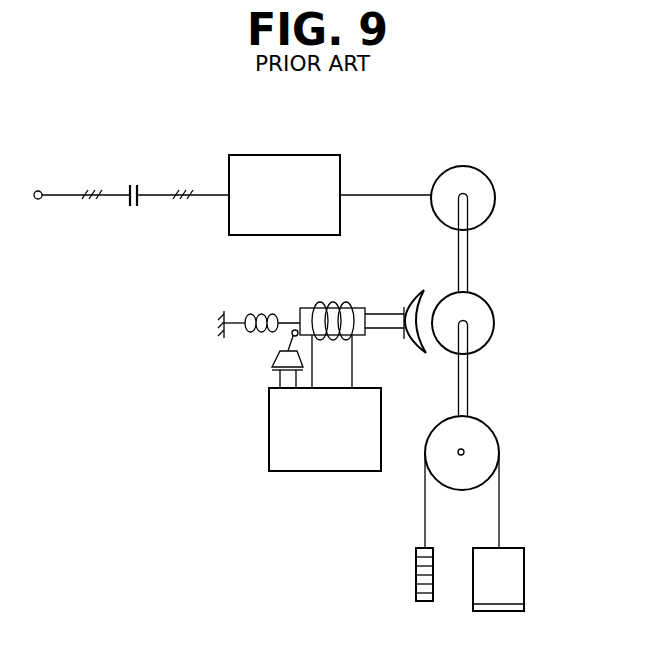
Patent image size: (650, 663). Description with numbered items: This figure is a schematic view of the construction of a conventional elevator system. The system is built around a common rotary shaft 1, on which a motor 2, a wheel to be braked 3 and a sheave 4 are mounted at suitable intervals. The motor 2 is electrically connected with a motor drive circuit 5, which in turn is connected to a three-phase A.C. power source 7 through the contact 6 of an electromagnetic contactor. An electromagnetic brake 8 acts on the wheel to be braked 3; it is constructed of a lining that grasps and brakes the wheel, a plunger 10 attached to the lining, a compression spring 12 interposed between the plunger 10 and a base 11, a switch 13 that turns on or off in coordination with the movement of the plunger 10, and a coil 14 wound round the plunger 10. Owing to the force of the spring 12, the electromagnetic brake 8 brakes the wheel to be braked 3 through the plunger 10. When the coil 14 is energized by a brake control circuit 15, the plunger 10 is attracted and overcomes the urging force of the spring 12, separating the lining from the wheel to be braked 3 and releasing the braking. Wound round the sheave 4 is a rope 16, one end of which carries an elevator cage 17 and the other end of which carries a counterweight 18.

The common rotary shaft 1 is at (466, 262).
The motor 2 is at (477, 167).
The wheel to be braked 3 is at (495, 320).
The sheave 4 is at (500, 436).
The motor drive circuit 5 is at (284, 153).
The contact 6 is at (138, 184).
The three-phase A.C. power source 7 is at (40, 189).
The electromagnetic brake 8 is at (316, 276).
The plunger 10 is at (373, 312).
The base 11 is at (226, 310).
The compression spring 12 is at (264, 310).
The switch 13 is at (278, 352).
The coil 14 is at (325, 302).
The brake control circuit 15 is at (322, 471).
The rope 16 is at (500, 510).
The elevator cage 17 is at (525, 578).
The counterweight 18 is at (415, 576).